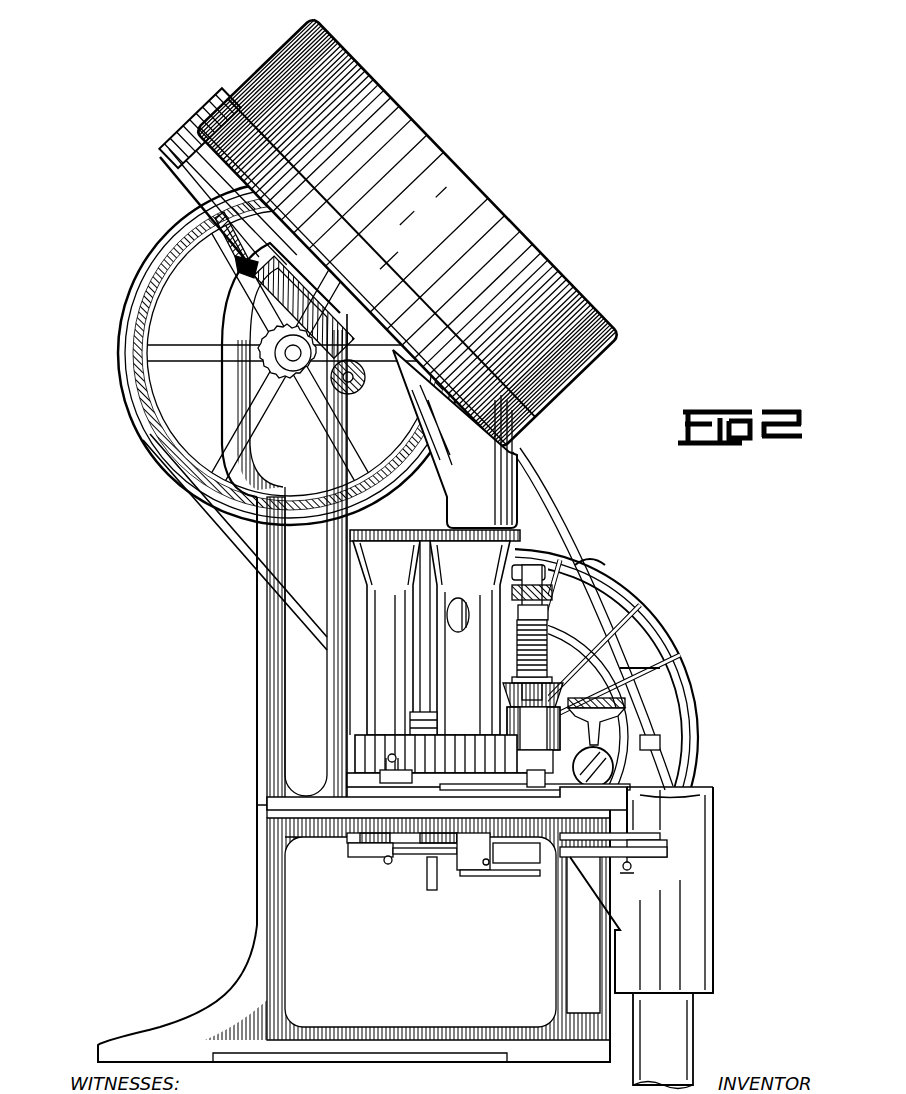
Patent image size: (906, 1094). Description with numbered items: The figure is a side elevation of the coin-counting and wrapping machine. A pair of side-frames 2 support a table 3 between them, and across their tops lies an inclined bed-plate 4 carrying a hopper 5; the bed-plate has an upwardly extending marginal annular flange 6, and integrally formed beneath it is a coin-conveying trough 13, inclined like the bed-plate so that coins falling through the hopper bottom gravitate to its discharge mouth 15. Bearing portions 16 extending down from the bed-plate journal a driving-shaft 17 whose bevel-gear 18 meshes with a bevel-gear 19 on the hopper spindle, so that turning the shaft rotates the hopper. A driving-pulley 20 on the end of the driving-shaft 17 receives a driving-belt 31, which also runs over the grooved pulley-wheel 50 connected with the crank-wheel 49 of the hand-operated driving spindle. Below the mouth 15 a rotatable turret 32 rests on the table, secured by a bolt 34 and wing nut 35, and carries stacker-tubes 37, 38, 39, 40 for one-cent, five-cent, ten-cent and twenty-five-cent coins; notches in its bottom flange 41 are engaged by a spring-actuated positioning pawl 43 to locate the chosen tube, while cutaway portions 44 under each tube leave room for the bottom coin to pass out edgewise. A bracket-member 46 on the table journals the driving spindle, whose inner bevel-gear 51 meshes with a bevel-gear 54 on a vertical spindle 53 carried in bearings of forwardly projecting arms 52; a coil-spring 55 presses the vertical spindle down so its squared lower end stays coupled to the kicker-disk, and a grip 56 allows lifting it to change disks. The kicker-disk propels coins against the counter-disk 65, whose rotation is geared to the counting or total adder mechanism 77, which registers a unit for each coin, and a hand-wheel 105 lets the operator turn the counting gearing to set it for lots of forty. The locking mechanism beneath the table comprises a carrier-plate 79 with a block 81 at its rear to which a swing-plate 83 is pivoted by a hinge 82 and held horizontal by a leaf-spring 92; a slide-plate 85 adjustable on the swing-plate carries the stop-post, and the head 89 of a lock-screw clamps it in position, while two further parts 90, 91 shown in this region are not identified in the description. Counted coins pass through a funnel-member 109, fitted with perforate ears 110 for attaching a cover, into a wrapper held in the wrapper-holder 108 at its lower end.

The side-frames 2 is at (262, 592).
The table 3 is at (380, 802).
The inclined bed-plate 4 is at (183, 140).
The hopper 5 is at (287, 52).
The marginal annular flange 6 is at (370, 255).
The coin-conveying trough 13 is at (210, 188).
The discharge mouth 15 is at (490, 505).
The bearing portions 16 is at (284, 388).
The driving-shaft 17 is at (290, 358).
The bevel-gear 18 is at (235, 324).
The bevel-gear 19 is at (238, 273).
The driving-pulley 20 is at (130, 340).
The driving-belt 31 is at (225, 553).
The turret 32 is at (436, 754).
The bolt 34 is at (412, 714).
The wing nut 35 is at (425, 862).
The stacker-tube for one-cent coins 37 is at (520, 544).
The stacker-tube for five-cent coins 38 is at (470, 638).
The stacker-tube for ten-cent coins 39 is at (386, 638).
The stacker-tube for twenty-five-cent coins 40 is at (420, 600).
The flange 41 is at (438, 764).
The positioning pawl 43 is at (396, 782).
The cutaway portions 44 is at (488, 788).
The bracket-member 46 is at (548, 660).
The crank-wheel 49 is at (632, 597).
The grooved pulley-wheel 50 is at (585, 647).
The bevel-gear 51 is at (600, 712).
The forwardly projecting arms 52 is at (545, 600).
The vertical spindle 53 is at (580, 572).
The bevel-gear 54 is at (660, 668).
The coil-spring 55 is at (626, 620).
The handle-portion or grip 56 is at (592, 560).
The counter-disk 65 is at (534, 786).
The counting or total adder mechanism 77 is at (593, 767).
The carrier-plate 79 is at (352, 850).
The block 81 is at (366, 852).
The hinge 82 is at (388, 868).
The swing-plate 83 is at (436, 880).
The slide-plate 85 is at (672, 840).
The head of lock-screw 89 is at (633, 872).
The block 90 is at (466, 872).
The pin 91 is at (488, 866).
The leaf-spring 92 is at (525, 878).
The hand-wheel 105 is at (655, 702).
The wrapper-holder 108 is at (685, 1022).
The funnel-member 109 is at (662, 920).
The perforate ears 110 is at (692, 782).